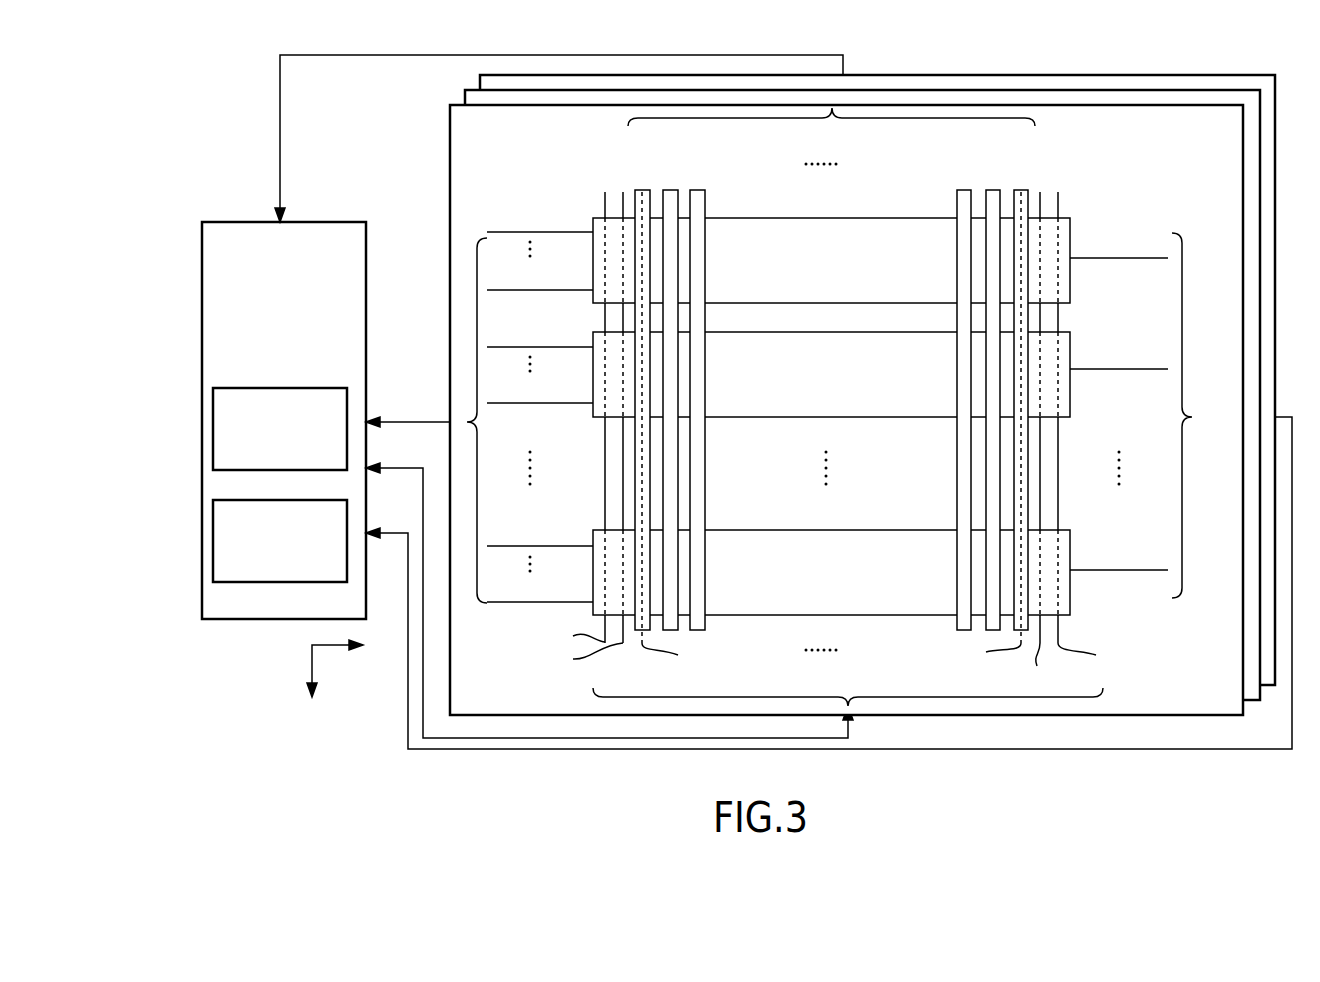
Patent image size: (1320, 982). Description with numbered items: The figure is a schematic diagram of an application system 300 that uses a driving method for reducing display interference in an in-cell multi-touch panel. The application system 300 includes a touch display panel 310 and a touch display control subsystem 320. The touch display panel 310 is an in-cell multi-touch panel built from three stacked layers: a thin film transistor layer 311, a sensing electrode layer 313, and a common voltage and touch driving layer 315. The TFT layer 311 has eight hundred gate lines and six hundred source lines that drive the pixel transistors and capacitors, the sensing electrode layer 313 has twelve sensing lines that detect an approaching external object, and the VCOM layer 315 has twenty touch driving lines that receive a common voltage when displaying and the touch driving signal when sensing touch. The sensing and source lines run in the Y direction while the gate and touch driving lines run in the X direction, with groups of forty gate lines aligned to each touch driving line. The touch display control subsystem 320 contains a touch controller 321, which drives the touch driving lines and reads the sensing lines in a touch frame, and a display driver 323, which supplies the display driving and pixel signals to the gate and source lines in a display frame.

The application system 300 is at (223, 98).
The touch display panel 310 is at (438, 172).
The thin film transistor (TFT) layer 311 is at (479, 82).
The sensing electrode layer 313 is at (449, 140).
The common voltage and touch driving layer (VCOM) 315 is at (464, 100).
The touch display control subsystem 320 is at (312, 222).
The touch controller 321 is at (347, 390).
The display driver 323 is at (237, 583).